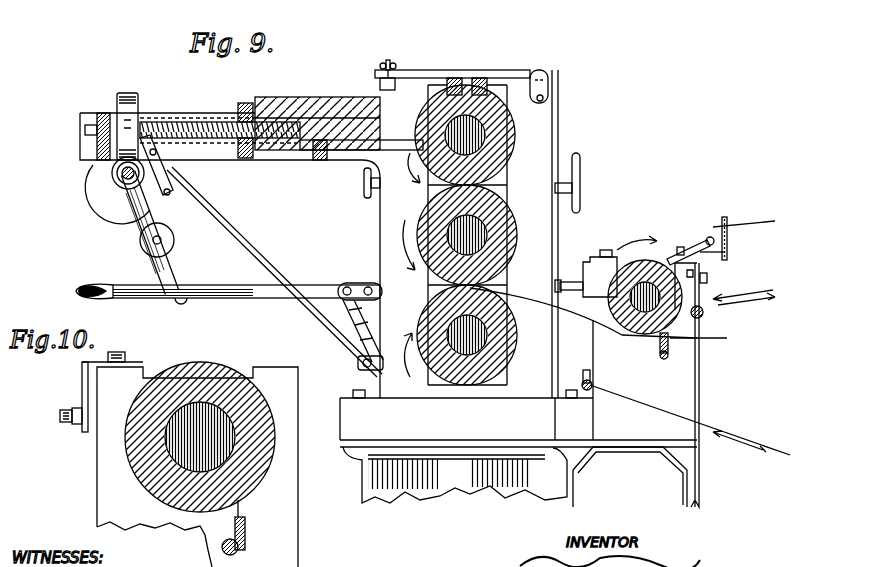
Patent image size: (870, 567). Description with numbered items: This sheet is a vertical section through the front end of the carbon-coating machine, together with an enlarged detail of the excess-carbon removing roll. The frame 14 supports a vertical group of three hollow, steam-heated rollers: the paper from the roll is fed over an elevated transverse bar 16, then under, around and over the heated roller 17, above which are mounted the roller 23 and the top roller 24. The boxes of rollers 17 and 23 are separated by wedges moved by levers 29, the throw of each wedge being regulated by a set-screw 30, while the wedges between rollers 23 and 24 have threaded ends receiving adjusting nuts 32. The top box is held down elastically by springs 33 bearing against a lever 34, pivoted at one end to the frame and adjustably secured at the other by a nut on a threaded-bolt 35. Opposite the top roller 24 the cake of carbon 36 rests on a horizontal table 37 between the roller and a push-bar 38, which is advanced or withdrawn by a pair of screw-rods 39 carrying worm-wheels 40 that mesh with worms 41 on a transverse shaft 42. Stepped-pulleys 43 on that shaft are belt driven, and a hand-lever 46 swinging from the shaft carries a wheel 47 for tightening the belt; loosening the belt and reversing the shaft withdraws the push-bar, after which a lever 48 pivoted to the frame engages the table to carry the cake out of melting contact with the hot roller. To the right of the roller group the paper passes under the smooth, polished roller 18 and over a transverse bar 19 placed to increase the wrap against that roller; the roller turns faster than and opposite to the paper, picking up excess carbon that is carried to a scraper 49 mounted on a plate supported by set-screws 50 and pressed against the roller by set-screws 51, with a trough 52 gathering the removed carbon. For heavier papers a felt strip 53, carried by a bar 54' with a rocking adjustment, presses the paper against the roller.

In FIG. 9, the frame 14 is at (380, 236).
In FIG. 9, the transverse bar 16 is at (593, 384).
In FIG. 9, the transverse horizontal roll 17 is at (515, 337).
In FIG. 9, the roll 18 is at (632, 328).
In FIG. 9, the transverse bar 19 is at (706, 313).
In FIG. 9, the roller 23 is at (515, 237).
In FIG. 9, the roller 24 is at (512, 135).
In FIG. 9, the levers 29 is at (272, 297).
In FIG. 9, the set-screw 30 is at (573, 282).
In FIG. 9, the adjusting nuts 32 is at (366, 195).
In FIG. 9, the springs 33 is at (480, 78).
In FIG. 9, the lever 34 is at (520, 70).
In FIG. 9, the threaded-bolt 35 is at (388, 60).
In FIG. 9, the cake of carbon 36 is at (320, 97).
In FIG. 9, the horizontal table 37 is at (352, 143).
In FIG. 9, the push-bar 38 is at (243, 103).
In FIG. 9, the screw-rods 39 is at (172, 120).
In FIG. 9, the worm-wheels 40 is at (127, 93).
In FIG. 9, the worms 41 is at (117, 173).
In FIG. 9, the transverse shaft 42 is at (120, 178).
In FIG. 9, the stepped-pulleys 43 is at (105, 198).
In FIG. 9, the lever 46 is at (160, 268).
In FIG. 9, the wheel 47 is at (174, 240).
In FIG. 9, the lever 48 is at (178, 173).
In FIG. 9, the scraper 49 is at (663, 257).
In FIG. 9, the set-screws 50 is at (693, 248).
In FIG. 9, the set-screws 51 is at (740, 228).
In FIG. 9, the trough 52 is at (728, 250).
In FIG. 9, the felt strip 53 is at (727, 340).
In FIG. 10, the felt strip 53 is at (245, 505).
In FIG. 9, the bar 54' is at (663, 359).
In FIG. 10, the bar 54' is at (255, 542).